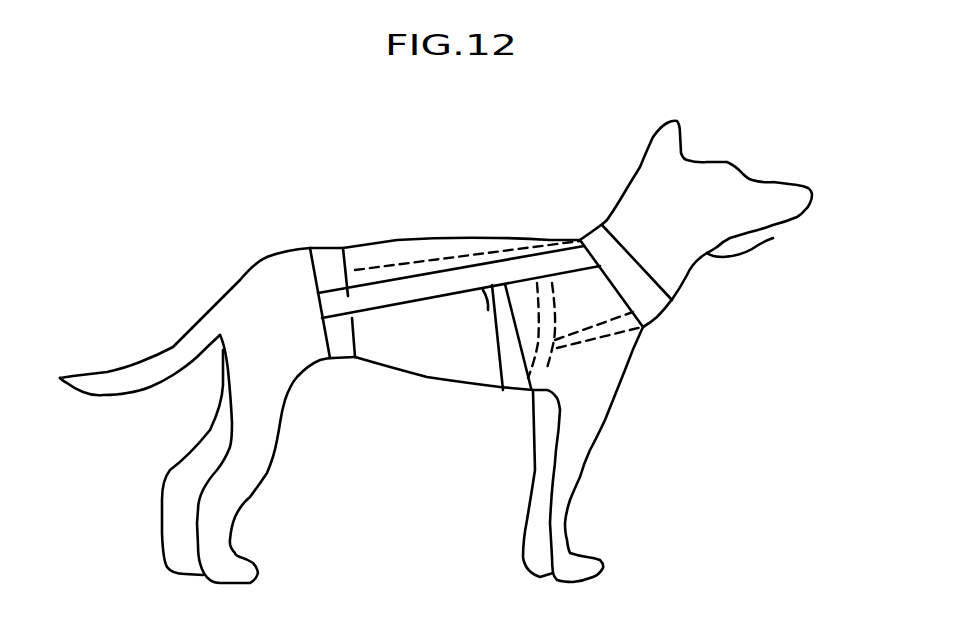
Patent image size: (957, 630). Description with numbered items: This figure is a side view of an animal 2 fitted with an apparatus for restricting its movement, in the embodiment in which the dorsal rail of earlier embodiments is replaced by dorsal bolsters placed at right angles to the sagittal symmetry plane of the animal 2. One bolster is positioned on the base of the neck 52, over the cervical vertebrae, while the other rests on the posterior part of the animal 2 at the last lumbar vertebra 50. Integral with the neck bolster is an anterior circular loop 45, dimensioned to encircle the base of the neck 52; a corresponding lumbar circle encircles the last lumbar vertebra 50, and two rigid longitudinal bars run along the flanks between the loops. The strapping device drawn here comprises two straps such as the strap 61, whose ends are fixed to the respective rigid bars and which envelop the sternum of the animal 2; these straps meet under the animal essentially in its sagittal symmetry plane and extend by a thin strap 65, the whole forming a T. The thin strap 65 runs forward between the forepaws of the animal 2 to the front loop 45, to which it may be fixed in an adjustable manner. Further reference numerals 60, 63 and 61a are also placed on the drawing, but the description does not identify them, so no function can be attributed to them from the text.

The animal 2 is at (698, 140).
The last lumbar vertebra 50 is at (509, 360).
The rear strap 60 is at (348, 369).
The longitudinal belt strap 63 is at (397, 290).
The strap 61 is at (513, 360).
The front strap upper portion 61a is at (488, 310).
The anterior circular loop 45 is at (637, 287).
The base of the neck 52 is at (693, 252).
The thin strap 65 is at (585, 342).